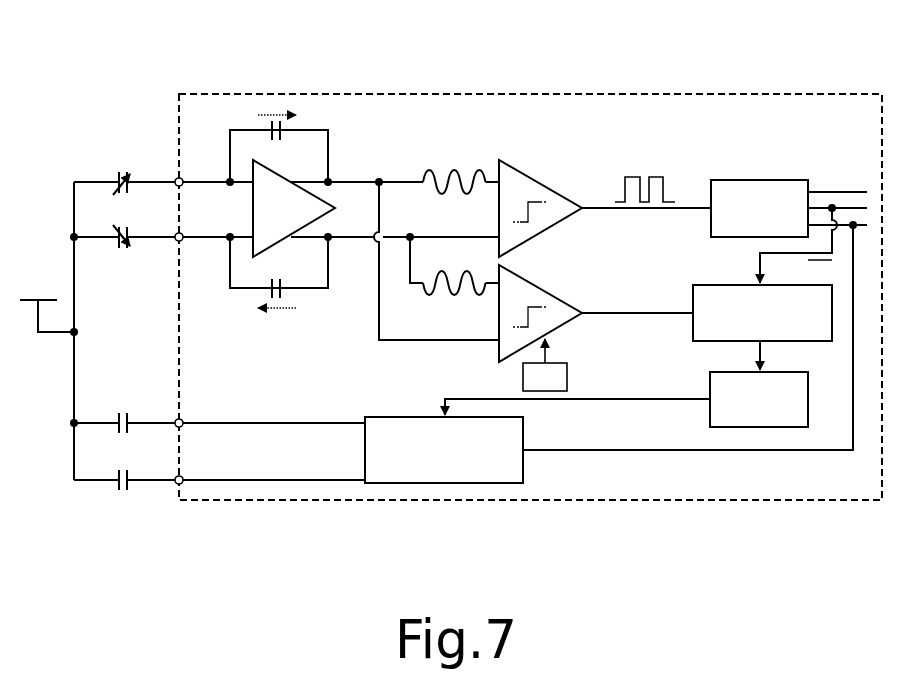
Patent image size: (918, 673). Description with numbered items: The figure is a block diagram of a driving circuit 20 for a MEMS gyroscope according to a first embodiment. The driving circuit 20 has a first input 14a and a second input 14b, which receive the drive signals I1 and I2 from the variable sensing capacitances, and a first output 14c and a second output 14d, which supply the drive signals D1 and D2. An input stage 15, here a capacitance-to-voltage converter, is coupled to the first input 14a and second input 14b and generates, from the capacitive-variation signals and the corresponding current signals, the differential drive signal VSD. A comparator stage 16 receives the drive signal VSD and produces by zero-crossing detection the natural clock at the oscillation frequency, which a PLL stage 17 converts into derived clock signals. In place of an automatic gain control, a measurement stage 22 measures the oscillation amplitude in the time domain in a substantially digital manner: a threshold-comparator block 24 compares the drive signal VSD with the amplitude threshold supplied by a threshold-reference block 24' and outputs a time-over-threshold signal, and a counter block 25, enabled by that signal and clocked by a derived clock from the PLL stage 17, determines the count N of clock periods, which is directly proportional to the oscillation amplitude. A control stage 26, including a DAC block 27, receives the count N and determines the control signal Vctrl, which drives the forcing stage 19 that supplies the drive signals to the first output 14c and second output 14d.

The driving circuit 20 is at (99, 116).
The first input 14a is at (176, 179).
The second input 14b is at (176, 241).
The first output 14c is at (176, 419).
The second output 14d is at (176, 484).
The input stage 15 is at (353, 171).
The comparator stage 16 is at (523, 186).
The PLL stage 17 is at (738, 178).
The forcing stage 19 is at (382, 425).
The measurement stage 22 is at (633, 276).
The threshold-comparator block 24 is at (540, 302).
The threshold-reference block 24' is at (566, 365).
The counter block 25 is at (697, 328).
The control stage 26 is at (744, 434).
The DAC block 27 is at (708, 418).